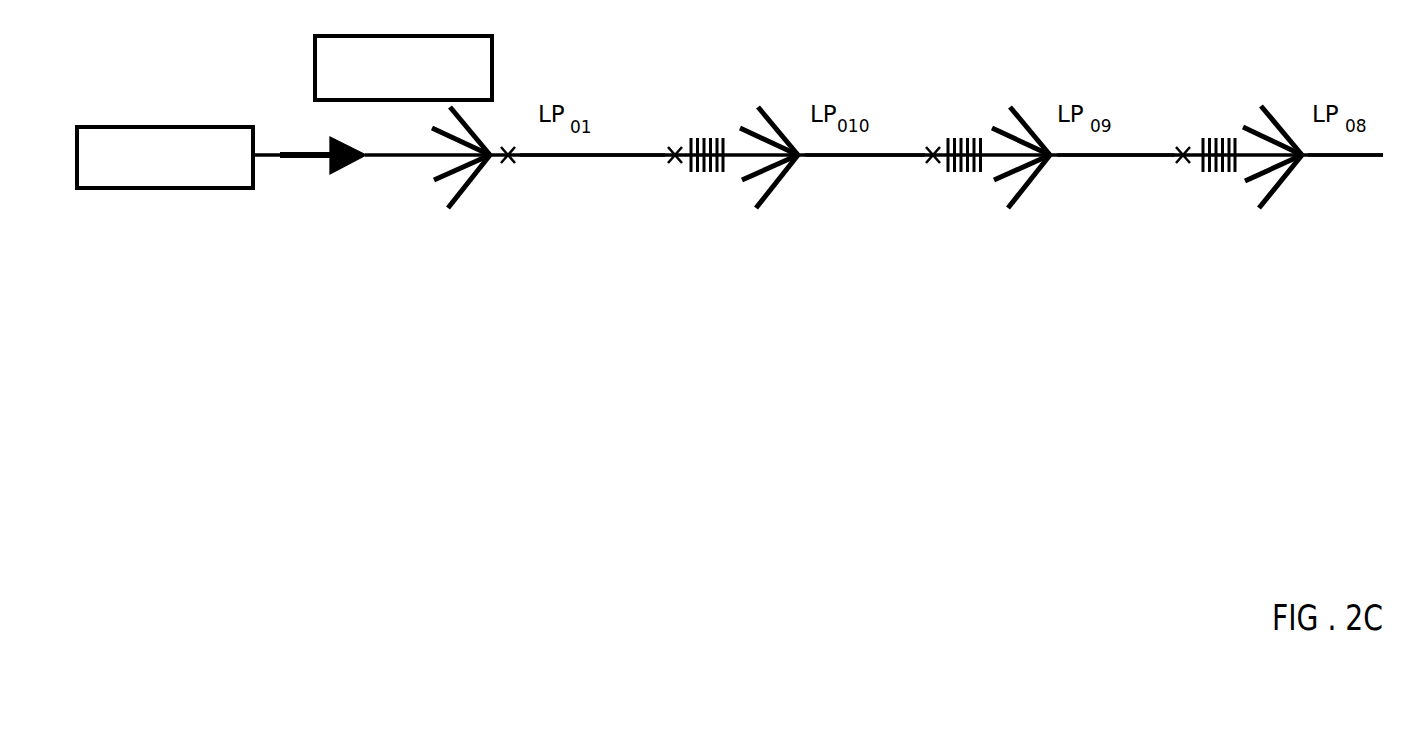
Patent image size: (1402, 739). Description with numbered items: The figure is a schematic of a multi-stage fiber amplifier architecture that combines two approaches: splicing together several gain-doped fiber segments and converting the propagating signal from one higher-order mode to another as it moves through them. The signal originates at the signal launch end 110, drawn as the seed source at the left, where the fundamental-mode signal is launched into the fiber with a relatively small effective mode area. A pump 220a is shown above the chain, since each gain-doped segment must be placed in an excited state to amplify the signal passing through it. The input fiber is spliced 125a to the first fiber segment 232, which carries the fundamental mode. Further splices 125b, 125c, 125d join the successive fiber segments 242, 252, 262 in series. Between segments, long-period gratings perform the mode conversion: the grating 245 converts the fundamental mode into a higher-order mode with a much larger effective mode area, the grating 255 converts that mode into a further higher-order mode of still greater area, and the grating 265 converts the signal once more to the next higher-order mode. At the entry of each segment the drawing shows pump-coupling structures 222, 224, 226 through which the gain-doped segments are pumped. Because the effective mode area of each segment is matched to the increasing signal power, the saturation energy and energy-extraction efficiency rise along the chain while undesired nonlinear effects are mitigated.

The signal launch end 110 is at (157, 127).
The pump source 220a is at (373, 36).
The splice 125a is at (508, 162).
The splice 125b is at (672, 163).
The splice 125c is at (930, 163).
The splice 125d is at (1180, 163).
The fiber segment 232 is at (558, 157).
The fiber segment 242 is at (820, 157).
The fiber segment 252 is at (1062, 157).
The fiber segment 262 is at (1312, 157).
The long-period grating 245 is at (710, 137).
The long-period grating 255 is at (968, 137).
The mode converter / long-period grating 265 is at (1222, 137).
The pump combiner 222 is at (757, 106).
The pump combiner 224 is at (1010, 107).
The pump combiner 226 is at (1261, 106).